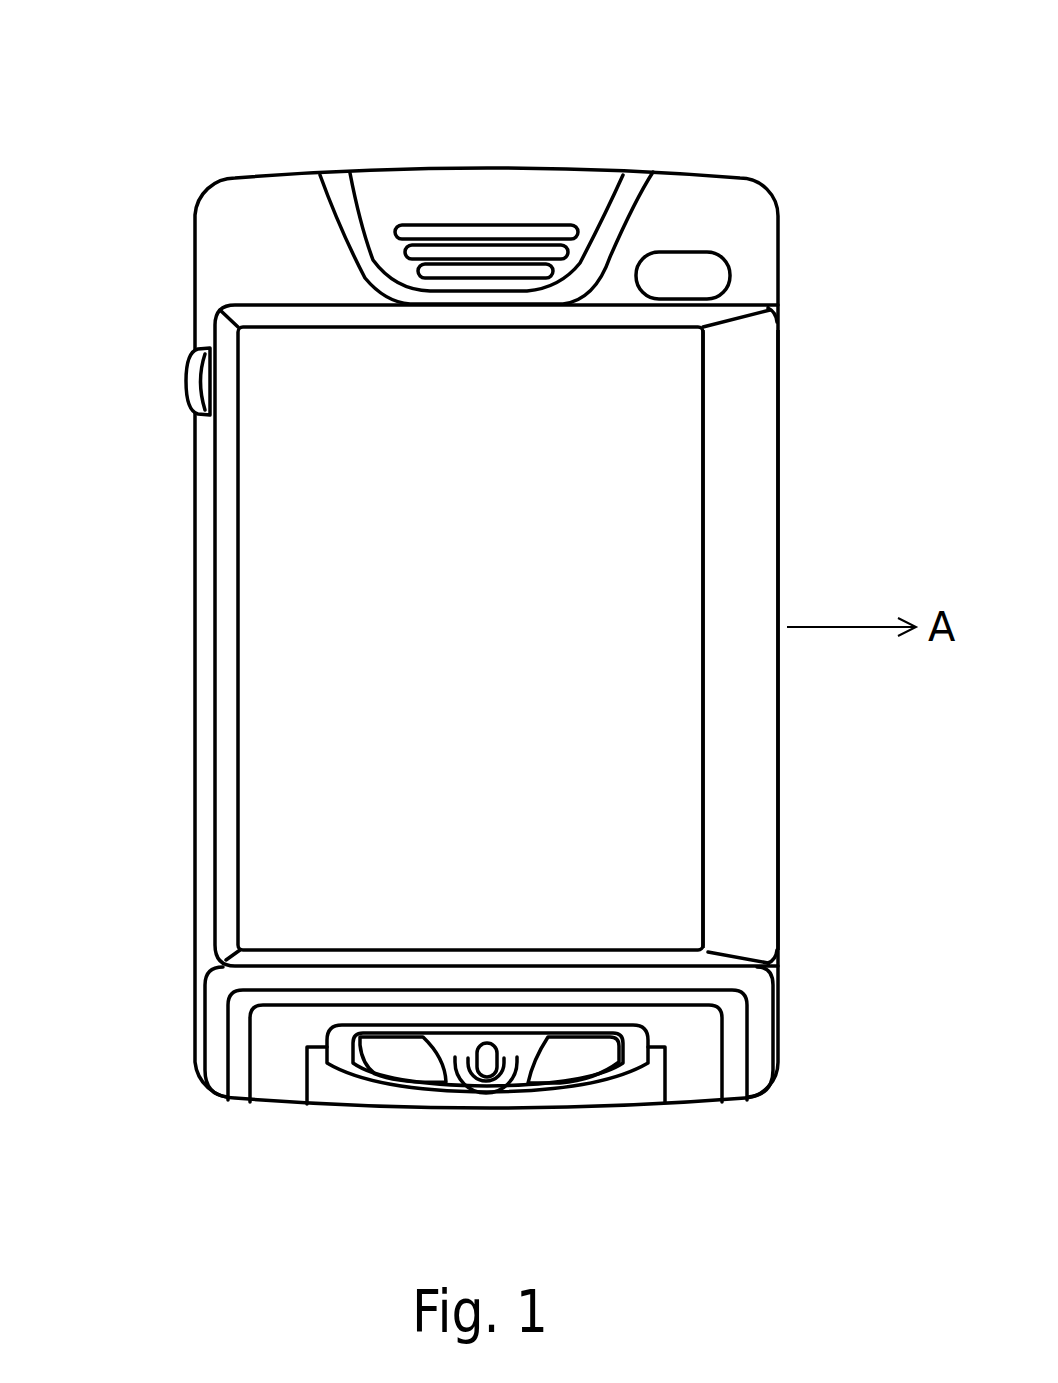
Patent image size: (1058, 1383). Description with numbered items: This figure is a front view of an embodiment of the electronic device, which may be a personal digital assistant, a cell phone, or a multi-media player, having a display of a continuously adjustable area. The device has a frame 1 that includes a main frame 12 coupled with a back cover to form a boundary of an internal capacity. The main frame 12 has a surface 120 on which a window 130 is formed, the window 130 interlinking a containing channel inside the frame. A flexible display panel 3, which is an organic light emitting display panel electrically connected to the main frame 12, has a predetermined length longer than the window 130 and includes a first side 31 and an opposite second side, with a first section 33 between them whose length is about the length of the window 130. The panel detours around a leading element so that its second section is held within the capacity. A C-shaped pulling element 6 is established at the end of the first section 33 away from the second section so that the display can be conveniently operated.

The frame 1 is at (150, 160).
The main frame 12 is at (338, 172).
The surface 120 is at (678, 195).
The flexible display panel 3 is at (238, 603).
The first section 33 is at (280, 665).
The window 130 is at (703, 420).
The pulling element 6 is at (735, 537).
The first side 31 is at (705, 805).